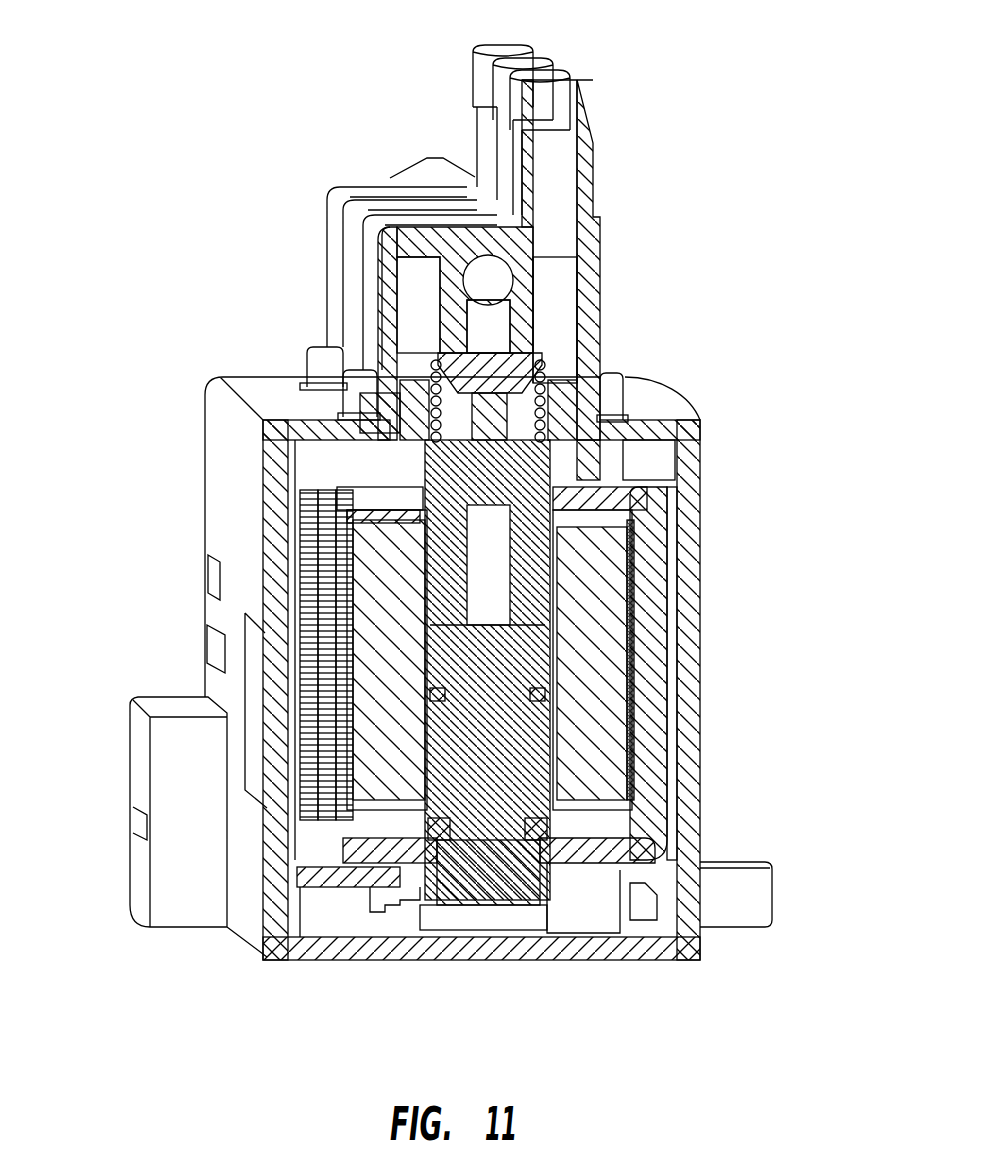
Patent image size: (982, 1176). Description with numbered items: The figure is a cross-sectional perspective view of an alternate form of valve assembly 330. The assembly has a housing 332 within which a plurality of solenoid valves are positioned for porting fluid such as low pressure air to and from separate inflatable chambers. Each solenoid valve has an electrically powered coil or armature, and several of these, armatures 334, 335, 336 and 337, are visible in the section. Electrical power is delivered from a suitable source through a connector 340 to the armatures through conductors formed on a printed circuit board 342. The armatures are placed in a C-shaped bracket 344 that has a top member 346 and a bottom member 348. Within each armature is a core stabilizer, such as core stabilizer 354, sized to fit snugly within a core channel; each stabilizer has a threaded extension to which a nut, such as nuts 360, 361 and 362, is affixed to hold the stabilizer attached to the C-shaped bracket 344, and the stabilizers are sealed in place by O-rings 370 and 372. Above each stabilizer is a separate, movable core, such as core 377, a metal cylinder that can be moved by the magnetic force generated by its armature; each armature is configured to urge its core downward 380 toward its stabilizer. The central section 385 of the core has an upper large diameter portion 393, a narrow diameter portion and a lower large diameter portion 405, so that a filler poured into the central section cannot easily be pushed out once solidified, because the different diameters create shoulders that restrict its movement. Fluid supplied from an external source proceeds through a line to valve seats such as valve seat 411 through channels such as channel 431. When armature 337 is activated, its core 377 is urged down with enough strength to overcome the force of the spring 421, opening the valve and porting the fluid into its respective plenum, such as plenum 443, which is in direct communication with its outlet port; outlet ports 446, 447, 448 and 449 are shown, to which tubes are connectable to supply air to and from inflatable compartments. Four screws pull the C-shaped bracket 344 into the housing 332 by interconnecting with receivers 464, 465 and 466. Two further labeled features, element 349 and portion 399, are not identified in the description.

The valve assembly 330 is at (120, 153).
The downward direction 380 is at (235, 133).
The housing 332 is at (703, 470).
The armature 334 is at (315, 585).
The armature 335 is at (320, 625).
The armature 336 is at (325, 660).
The armature 337 is at (590, 655).
The connector 340 is at (134, 783).
The printed circuit board 342 is at (345, 888).
The C-shaped bracket 344 is at (650, 770).
The top member 346 is at (640, 385).
The bottom member 348 is at (625, 900).
The cover block 349 is at (600, 440).
The core stabilizer 354 is at (517, 657).
The nut 360 is at (320, 352).
The nut 361 is at (600, 862).
The nut 362 is at (615, 395).
The O-ring 370 is at (545, 692).
The O-ring 372 is at (527, 835).
The core 377 is at (560, 380).
The central section 385 is at (430, 455).
The upper large diameter portion 393 is at (600, 325).
The gap 399 is at (643, 480).
The lower large diameter portion 405 is at (520, 583).
The valve seat 411 is at (487, 345).
The spring 421 is at (555, 375).
The channel 431 is at (500, 318).
The plenum 443 is at (557, 262).
The outlet port 446 is at (478, 73).
The outlet port 447 is at (500, 93).
The outlet port 448 is at (562, 72).
The outlet port 449 is at (597, 122).
The receiver 464 is at (375, 498).
The receiver 465 is at (340, 498).
The receiver 466 is at (597, 467).